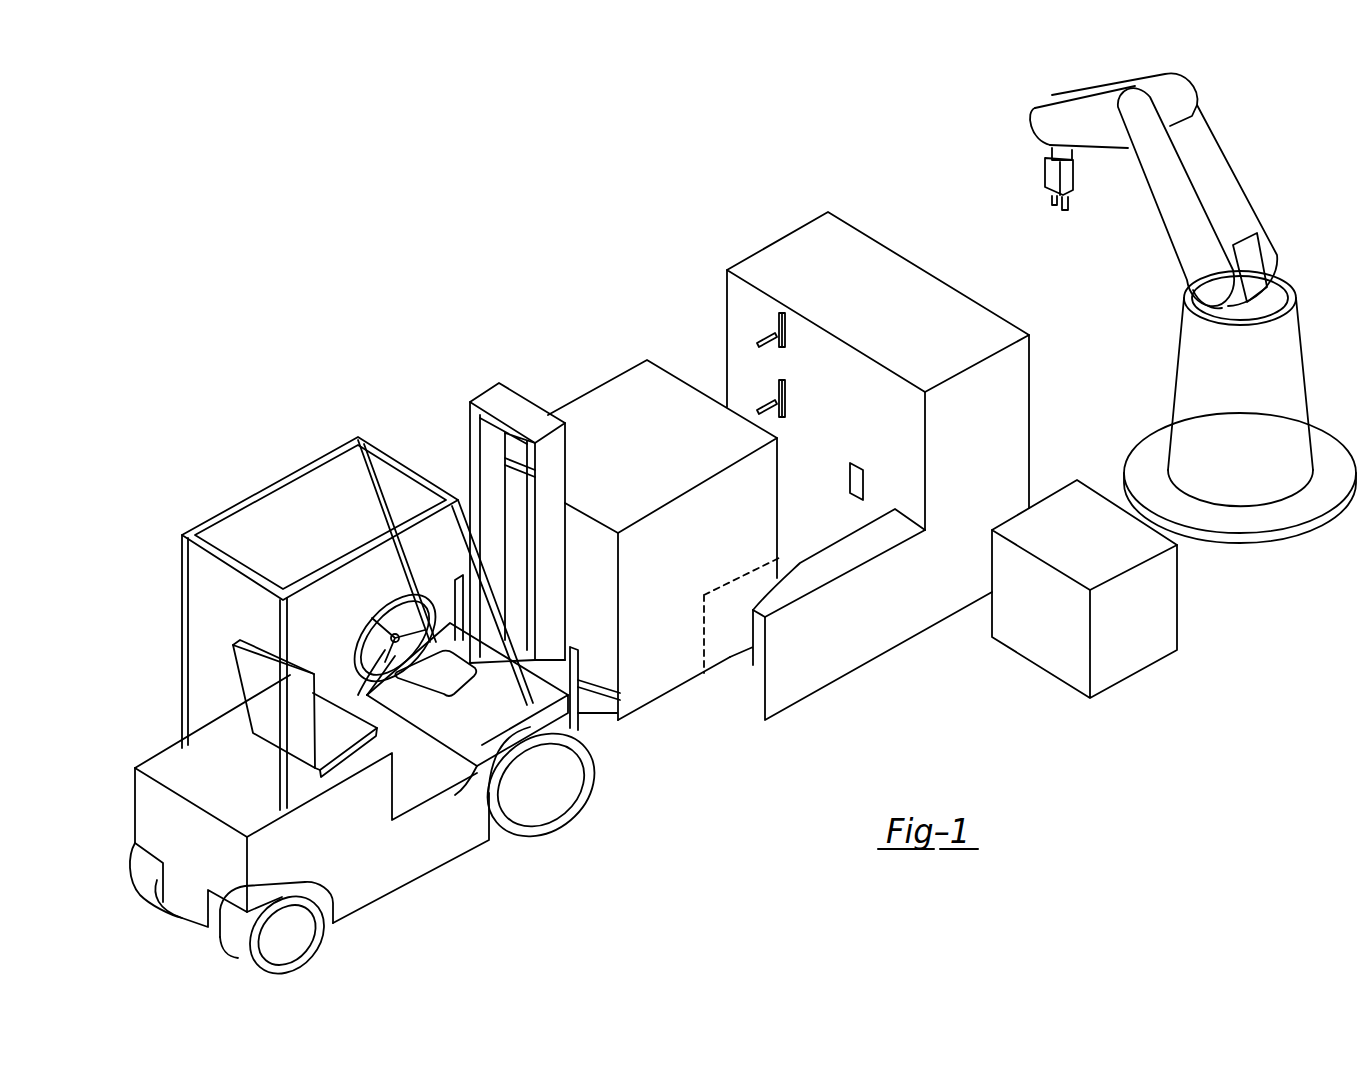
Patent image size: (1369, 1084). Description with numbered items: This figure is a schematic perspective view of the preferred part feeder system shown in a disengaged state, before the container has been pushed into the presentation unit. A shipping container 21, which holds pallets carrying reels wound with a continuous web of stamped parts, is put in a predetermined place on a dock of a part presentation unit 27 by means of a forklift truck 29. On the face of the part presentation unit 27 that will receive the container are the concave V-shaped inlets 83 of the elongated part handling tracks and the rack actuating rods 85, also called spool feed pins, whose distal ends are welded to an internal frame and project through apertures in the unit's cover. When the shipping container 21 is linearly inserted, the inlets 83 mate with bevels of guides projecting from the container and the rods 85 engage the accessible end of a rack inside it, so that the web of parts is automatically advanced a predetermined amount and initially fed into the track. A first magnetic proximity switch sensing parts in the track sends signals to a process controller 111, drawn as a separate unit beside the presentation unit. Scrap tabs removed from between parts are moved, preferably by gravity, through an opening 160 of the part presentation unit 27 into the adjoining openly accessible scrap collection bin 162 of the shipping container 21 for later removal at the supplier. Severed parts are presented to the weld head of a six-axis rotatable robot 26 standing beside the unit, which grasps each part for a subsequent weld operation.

The shipping container 21 is at (621, 461).
The robot 26 is at (1223, 455).
The part presentation unit 27 is at (918, 346).
The forklift truck 29 is at (333, 845).
The inlet 83 is at (786, 327).
The rack actuating rod 85 is at (765, 331).
The process controller 111 is at (1026, 623).
The opening 160 is at (855, 483).
The scrap collection bin 162 is at (722, 633).